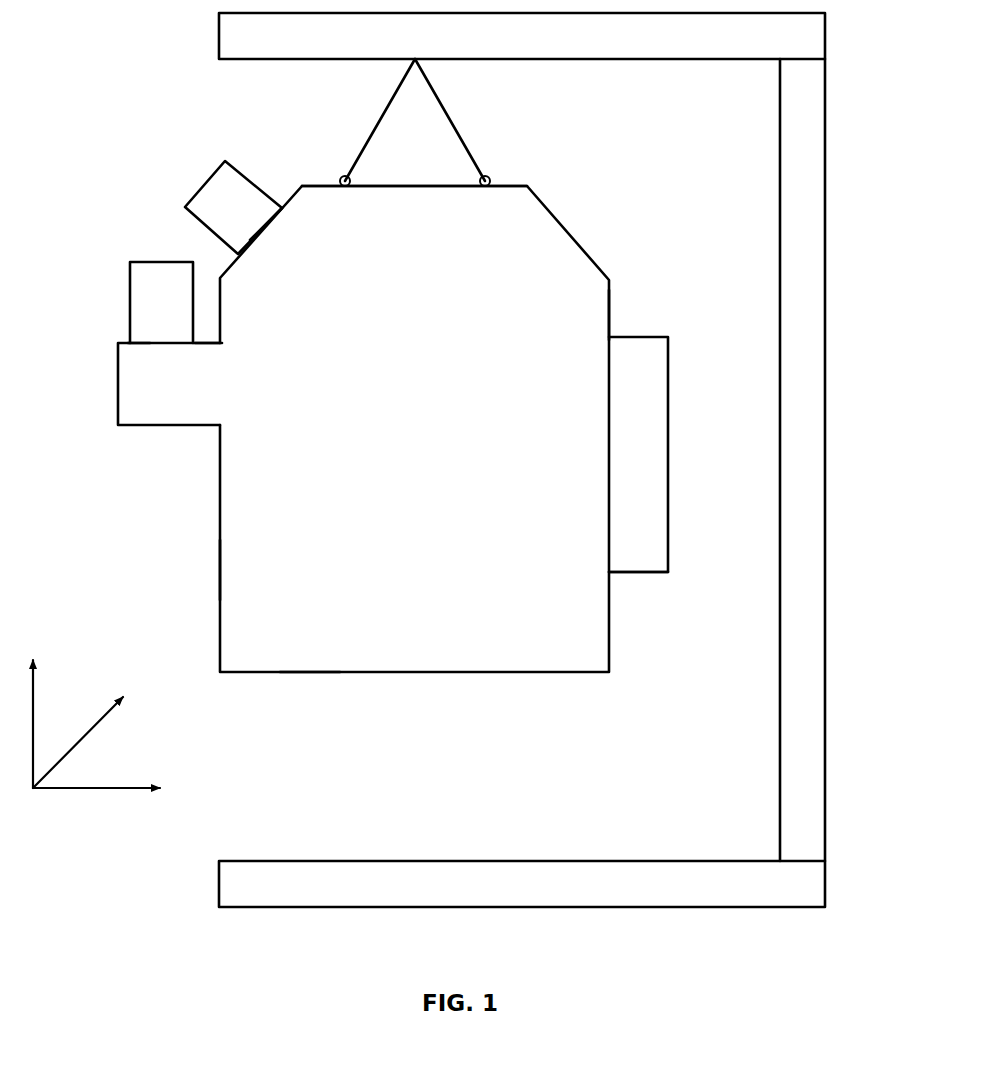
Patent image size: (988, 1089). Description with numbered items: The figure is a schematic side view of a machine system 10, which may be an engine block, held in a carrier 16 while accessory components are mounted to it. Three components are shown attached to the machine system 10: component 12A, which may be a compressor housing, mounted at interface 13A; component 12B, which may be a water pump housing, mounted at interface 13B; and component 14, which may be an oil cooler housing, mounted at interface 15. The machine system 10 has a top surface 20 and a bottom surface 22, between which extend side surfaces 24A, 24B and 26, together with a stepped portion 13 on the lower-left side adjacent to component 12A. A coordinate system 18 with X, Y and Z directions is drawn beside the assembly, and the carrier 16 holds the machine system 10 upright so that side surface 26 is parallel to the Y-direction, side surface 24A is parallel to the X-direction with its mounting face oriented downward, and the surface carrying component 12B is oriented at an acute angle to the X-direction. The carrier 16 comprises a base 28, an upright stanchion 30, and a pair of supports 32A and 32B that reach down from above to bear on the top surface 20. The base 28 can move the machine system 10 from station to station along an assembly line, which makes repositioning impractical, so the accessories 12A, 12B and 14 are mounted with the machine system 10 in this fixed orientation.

The machine system 10 is at (614, 276).
The component 12A is at (118, 289).
The component 12B is at (208, 163).
The step portion 13 is at (148, 382).
The interface 13A is at (142, 342).
The interface 13B is at (270, 218).
The component 14 is at (636, 590).
The interface 15 is at (611, 460).
The carrier 16 is at (567, 460).
The coordinate system 18 is at (102, 806).
The top surface 20 is at (509, 184).
The bottom surface 22 is at (306, 674).
The side surface 24A is at (218, 570).
The side surface 24B is at (206, 342).
The side surface 26 is at (611, 320).
The base 28 is at (615, 873).
The stanchion 30 is at (815, 336).
The support 32A is at (462, 135).
The support 32B is at (368, 135).